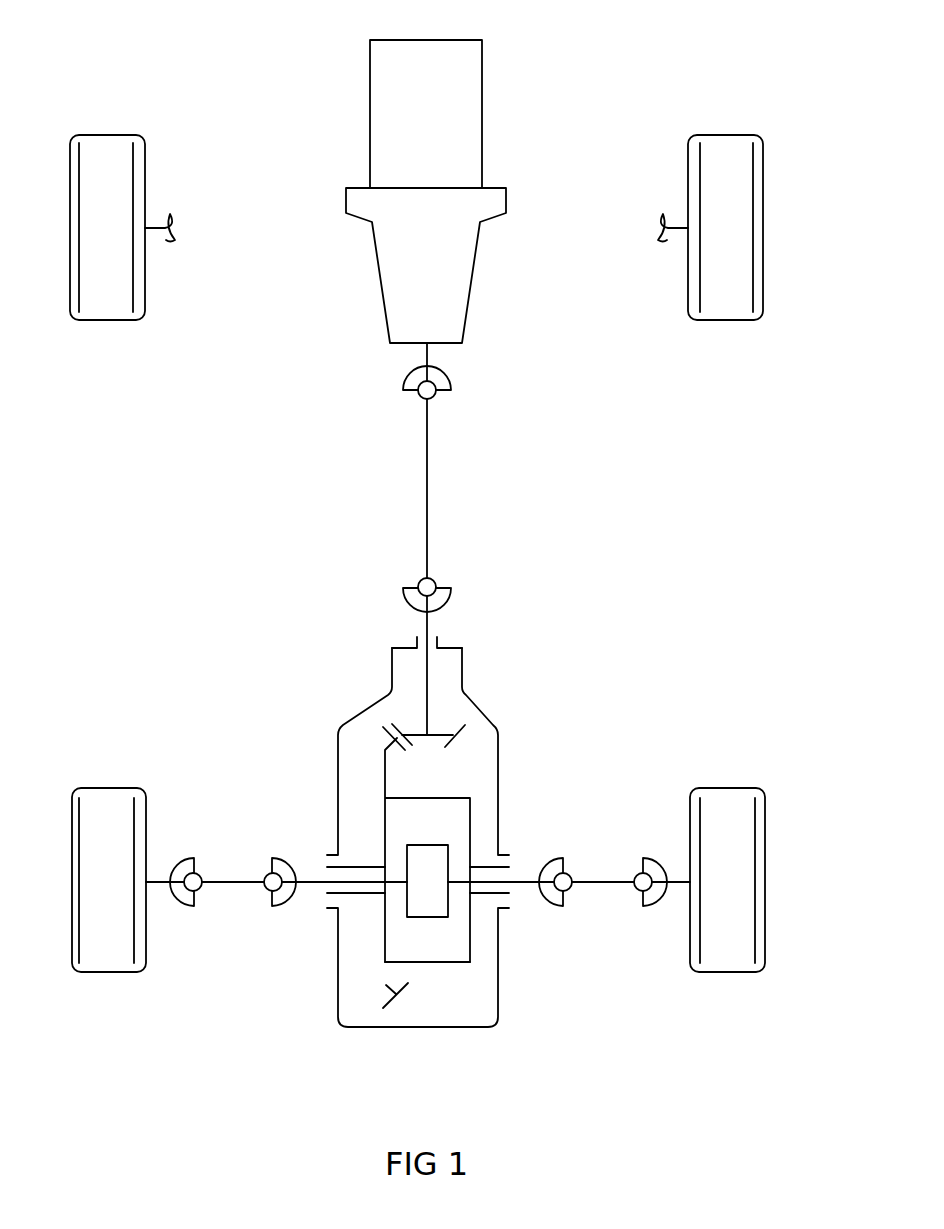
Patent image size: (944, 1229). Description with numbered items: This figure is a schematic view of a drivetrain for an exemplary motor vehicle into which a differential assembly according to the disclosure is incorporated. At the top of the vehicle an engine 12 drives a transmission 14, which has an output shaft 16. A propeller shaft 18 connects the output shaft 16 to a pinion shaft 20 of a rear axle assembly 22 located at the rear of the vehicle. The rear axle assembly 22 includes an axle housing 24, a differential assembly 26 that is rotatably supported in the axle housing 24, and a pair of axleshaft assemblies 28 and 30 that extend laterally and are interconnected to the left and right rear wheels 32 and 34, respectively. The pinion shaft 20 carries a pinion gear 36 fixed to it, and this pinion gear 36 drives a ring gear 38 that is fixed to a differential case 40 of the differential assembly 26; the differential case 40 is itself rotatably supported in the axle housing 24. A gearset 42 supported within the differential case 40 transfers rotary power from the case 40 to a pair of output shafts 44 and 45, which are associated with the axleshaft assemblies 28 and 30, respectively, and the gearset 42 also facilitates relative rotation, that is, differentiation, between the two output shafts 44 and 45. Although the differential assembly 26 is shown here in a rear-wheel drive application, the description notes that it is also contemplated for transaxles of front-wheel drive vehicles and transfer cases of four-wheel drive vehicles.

The engine 12 is at (482, 72).
The transmission 14 is at (468, 307).
The output shaft 16 is at (428, 358).
The propeller shaft 18 is at (427, 488).
The pinion shaft 20 is at (427, 692).
The rear axle assembly 22 is at (332, 678).
The axle housing 24 is at (448, 647).
The differential assembly 26 is at (377, 772).
The axleshaft assembly 28 is at (227, 897).
The axleshaft assembly 30 is at (605, 897).
The left rear wheel 32 is at (110, 788).
The right rear wheel 34 is at (728, 788).
The pinion gear 36 is at (450, 744).
The ring gear 38 is at (397, 1007).
The differential case 40 is at (445, 963).
The gearset 42 is at (430, 860).
The output shaft 44 is at (313, 883).
The output shaft 45 is at (518, 885).